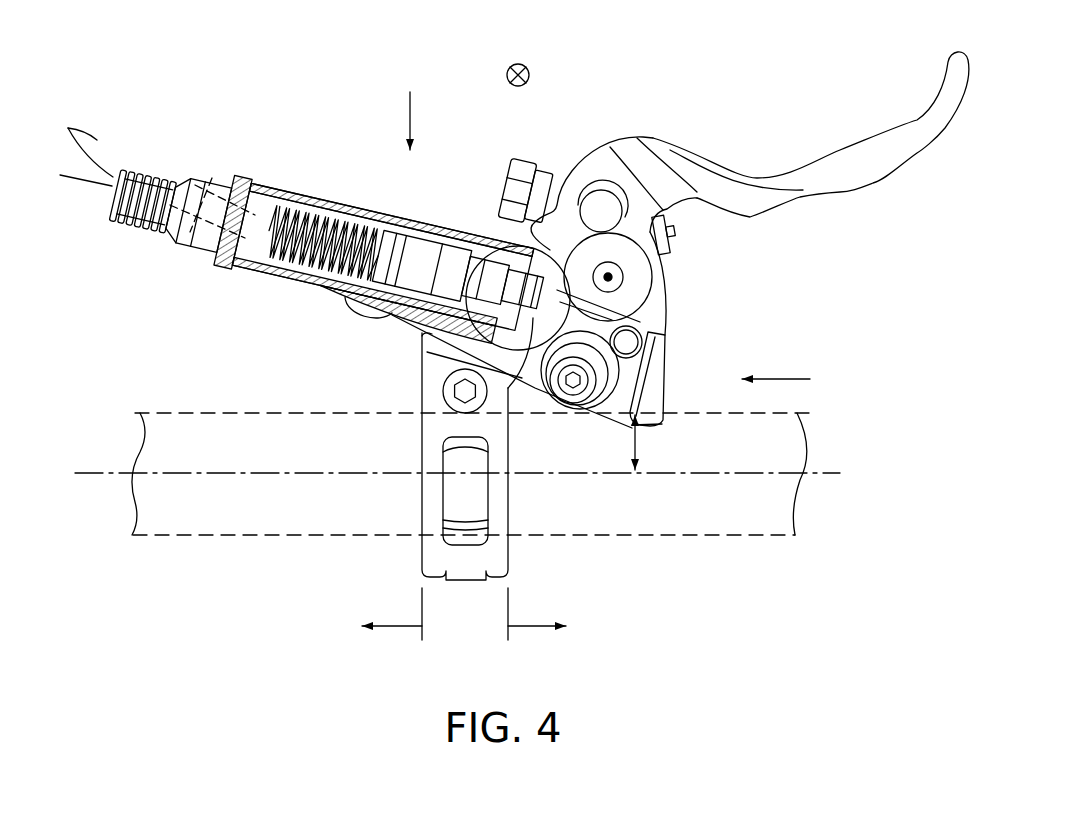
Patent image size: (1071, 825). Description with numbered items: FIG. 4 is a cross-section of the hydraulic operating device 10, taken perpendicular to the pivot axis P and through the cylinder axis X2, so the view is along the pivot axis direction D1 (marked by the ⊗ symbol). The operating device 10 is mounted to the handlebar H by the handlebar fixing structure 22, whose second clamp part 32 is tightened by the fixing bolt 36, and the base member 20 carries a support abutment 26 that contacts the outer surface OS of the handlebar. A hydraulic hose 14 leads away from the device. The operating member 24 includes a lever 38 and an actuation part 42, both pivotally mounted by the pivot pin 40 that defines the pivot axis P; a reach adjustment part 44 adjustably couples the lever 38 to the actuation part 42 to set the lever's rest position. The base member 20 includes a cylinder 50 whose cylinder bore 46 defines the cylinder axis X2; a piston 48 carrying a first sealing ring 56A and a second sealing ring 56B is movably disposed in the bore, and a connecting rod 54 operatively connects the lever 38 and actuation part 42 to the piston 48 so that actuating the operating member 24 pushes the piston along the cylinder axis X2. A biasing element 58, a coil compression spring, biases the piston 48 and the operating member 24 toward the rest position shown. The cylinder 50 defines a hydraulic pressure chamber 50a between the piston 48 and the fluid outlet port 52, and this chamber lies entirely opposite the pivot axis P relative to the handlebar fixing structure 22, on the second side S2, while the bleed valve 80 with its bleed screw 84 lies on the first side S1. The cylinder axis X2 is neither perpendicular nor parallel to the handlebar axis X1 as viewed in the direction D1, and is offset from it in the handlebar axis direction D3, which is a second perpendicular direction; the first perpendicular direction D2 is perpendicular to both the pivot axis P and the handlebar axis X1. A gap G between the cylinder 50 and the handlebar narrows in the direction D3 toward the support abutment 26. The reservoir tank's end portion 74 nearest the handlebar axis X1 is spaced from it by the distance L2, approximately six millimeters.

The operating device 10 is at (205, 75).
The hydraulic hose 14 is at (105, 170).
The base member 20 is at (661, 292).
The handlebar fixing structure 22 is at (418, 568).
The operating member 24 is at (602, 122).
The support abutment 26 is at (663, 418).
The second clamp part 32 is at (498, 522).
The fixing bolt 36 is at (442, 383).
The lever 38 is at (846, 148).
The pivot pin 40 is at (625, 280).
The actuation part 42 is at (650, 314).
The reach adjustment part 44 is at (504, 160).
The cylinder bore 46 is at (294, 274).
The piston 48 is at (446, 236).
The cylinder 50 is at (317, 200).
The hydraulic pressure chamber 50a is at (358, 214).
The fluid outlet port 52 is at (270, 200).
The connecting rod 54 is at (534, 346).
The first sealing ring 56A is at (463, 266).
The second sealing ring 56B is at (409, 248).
The biasing element 58 is at (334, 286).
The end portion 74 is at (663, 401).
The bleed valve 80 is at (584, 408).
The bleed screw 84 is at (570, 392).
The pivot axis direction D1 is at (527, 67).
The first perpendicular direction D2 is at (410, 108).
The handlebar axis direction D3 is at (782, 379).
The gap G is at (537, 420).
The distance L2 is at (638, 445).
The outer surface OS is at (216, 410).
The pivot axis P is at (612, 277).
The first side S1 is at (530, 628).
The second side S2 is at (398, 628).
The handlebar axis X1 is at (828, 478).
The cylinder axis X2 is at (204, 236).